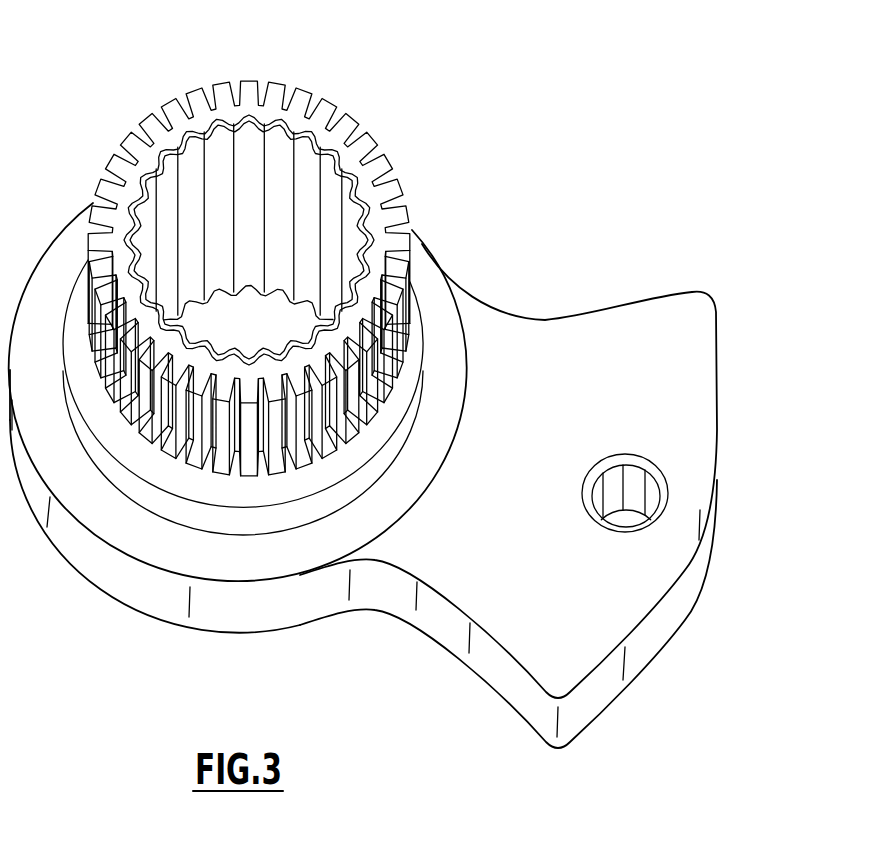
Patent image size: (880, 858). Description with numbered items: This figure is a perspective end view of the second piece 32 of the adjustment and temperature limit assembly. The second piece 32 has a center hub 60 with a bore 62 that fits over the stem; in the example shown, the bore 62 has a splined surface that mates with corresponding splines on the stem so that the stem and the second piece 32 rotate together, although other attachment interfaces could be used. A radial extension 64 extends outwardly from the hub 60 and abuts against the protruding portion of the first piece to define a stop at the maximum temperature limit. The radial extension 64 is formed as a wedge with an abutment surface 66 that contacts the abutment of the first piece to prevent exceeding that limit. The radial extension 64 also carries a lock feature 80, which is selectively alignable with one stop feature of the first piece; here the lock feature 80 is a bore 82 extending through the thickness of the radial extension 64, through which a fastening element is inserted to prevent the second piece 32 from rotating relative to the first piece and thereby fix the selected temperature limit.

The second piece 32 is at (112, 90).
The center hub 60 is at (370, 187).
The bore 62 is at (172, 179).
The radial extension 64 is at (702, 409).
The abutment surface 66 is at (620, 302).
The lock feature 80 is at (663, 476).
The bore 82 is at (624, 520).